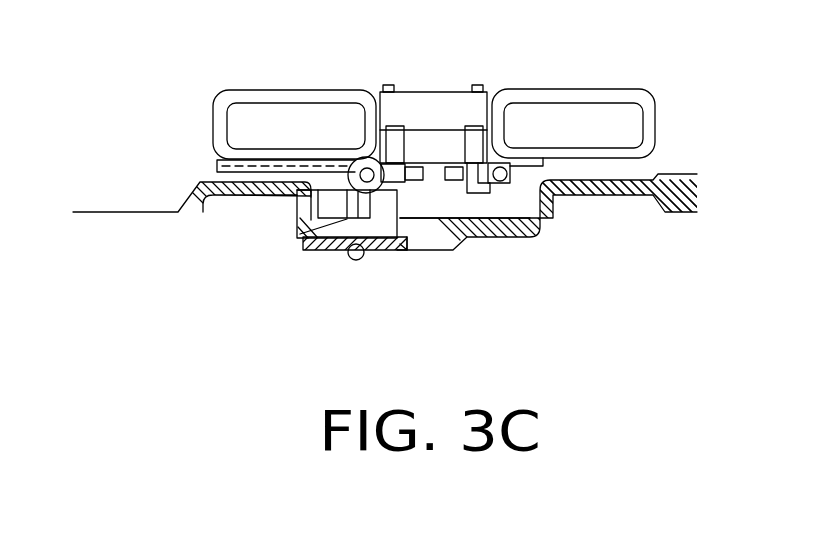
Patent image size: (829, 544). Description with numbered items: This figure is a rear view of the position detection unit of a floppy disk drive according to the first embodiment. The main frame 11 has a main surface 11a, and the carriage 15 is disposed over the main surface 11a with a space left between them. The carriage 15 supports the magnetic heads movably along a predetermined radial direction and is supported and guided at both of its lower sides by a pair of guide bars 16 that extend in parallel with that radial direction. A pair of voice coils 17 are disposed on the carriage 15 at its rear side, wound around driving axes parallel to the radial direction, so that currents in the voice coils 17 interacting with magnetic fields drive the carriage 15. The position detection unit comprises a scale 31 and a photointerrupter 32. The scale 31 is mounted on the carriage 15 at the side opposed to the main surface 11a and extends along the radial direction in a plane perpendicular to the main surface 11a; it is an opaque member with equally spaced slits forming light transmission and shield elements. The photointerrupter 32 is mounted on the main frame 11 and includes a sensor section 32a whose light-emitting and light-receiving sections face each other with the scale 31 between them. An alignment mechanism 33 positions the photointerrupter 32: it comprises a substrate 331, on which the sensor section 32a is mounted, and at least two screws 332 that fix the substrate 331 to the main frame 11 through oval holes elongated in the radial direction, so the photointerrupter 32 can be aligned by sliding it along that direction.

The main frame 11 is at (625, 195).
The main surface 11a is at (410, 218).
The carriage 15 is at (452, 105).
The guide bars 16 is at (508, 177).
The voice coils 17 is at (303, 90).
The scale 31 is at (297, 226).
The photointerrupter 32 is at (322, 250).
The sensor section 32a is at (297, 195).
The alignment mechanism 33 is at (385, 250).
The substrate 331 is at (400, 252).
The screws 332 is at (350, 262).